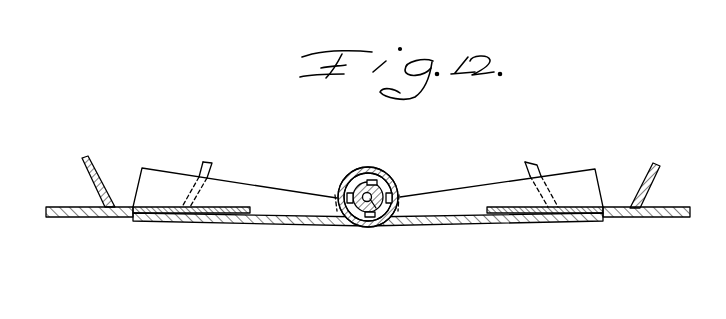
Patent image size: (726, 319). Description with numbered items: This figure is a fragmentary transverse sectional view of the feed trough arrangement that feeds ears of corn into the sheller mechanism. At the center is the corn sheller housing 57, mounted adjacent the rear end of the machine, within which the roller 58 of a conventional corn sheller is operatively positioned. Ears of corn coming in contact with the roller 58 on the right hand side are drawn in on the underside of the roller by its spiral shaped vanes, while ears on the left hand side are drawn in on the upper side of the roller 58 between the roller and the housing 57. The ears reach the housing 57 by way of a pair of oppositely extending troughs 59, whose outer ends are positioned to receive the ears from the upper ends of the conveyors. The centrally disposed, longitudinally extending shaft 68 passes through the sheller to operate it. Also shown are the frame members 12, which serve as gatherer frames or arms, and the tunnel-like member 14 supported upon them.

The frame members 12 is at (660, 216).
The tunnel-like member 14 is at (87, 165).
The corn sheller housing 57 is at (367, 170).
The roller 58 is at (377, 192).
The troughs 59 is at (267, 193).
The shaft 68 is at (370, 199).